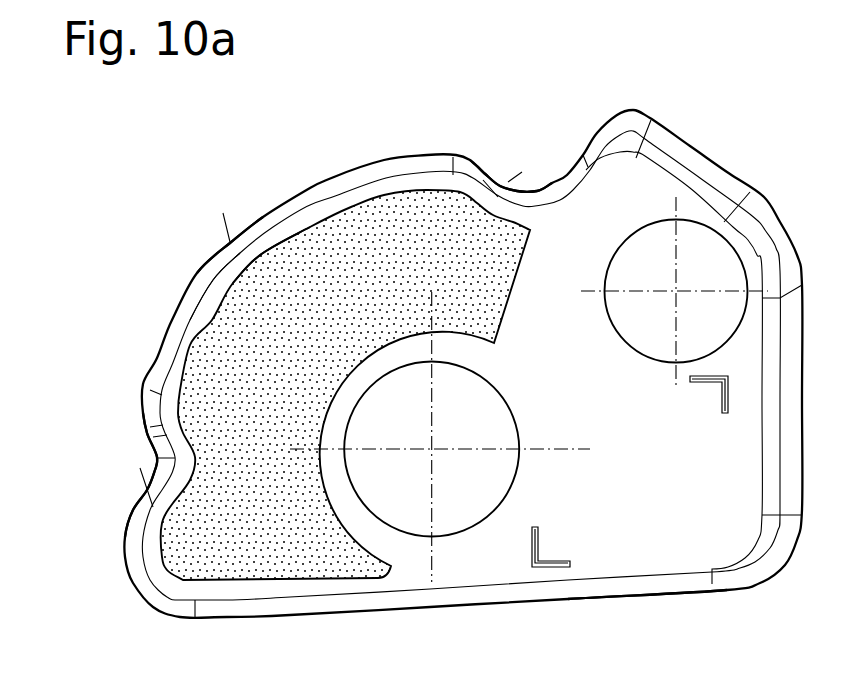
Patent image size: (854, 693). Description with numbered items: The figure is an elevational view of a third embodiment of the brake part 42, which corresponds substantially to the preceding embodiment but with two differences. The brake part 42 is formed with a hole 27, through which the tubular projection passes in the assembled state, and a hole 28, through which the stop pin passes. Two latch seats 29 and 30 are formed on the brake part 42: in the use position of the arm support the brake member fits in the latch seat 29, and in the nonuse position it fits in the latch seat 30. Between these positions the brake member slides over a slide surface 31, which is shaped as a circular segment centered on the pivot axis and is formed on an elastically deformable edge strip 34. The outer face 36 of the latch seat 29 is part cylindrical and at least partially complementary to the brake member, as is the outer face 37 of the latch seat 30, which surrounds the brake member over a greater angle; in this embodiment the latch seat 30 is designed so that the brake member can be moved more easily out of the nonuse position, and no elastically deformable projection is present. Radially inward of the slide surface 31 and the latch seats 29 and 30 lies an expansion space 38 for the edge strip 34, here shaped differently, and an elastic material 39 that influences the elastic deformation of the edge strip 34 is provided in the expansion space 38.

The hole 27 is at (446, 489).
The hole 28 is at (660, 326).
The latch seat 29 is at (538, 160).
The latch seat 30 is at (137, 457).
The slide surface 31 is at (230, 242).
The edge strip 34 is at (202, 293).
The outer face 36 is at (508, 182).
The outer face 37 is at (147, 485).
The expansion space 38 is at (295, 270).
The elastic material 39 is at (361, 252).
The brake part 42 is at (641, 539).